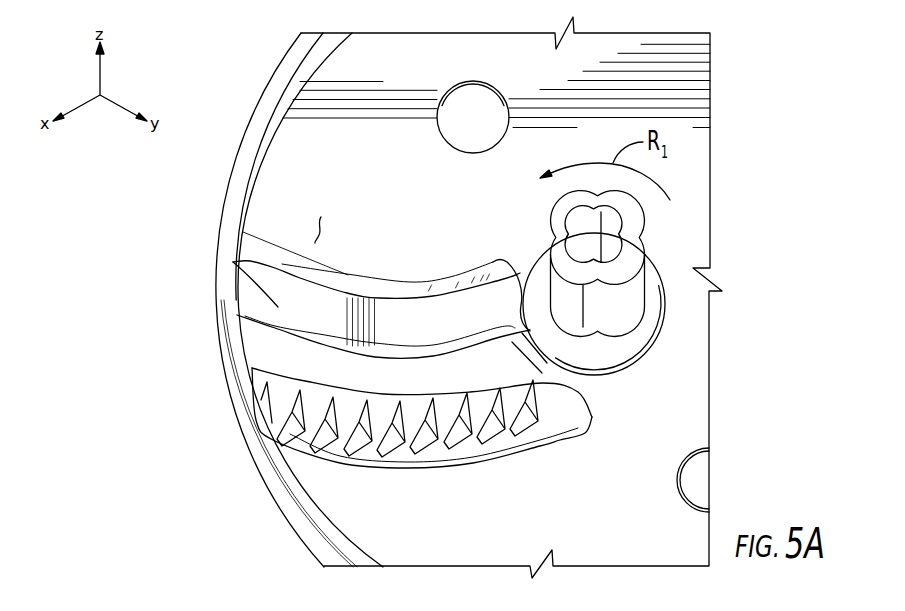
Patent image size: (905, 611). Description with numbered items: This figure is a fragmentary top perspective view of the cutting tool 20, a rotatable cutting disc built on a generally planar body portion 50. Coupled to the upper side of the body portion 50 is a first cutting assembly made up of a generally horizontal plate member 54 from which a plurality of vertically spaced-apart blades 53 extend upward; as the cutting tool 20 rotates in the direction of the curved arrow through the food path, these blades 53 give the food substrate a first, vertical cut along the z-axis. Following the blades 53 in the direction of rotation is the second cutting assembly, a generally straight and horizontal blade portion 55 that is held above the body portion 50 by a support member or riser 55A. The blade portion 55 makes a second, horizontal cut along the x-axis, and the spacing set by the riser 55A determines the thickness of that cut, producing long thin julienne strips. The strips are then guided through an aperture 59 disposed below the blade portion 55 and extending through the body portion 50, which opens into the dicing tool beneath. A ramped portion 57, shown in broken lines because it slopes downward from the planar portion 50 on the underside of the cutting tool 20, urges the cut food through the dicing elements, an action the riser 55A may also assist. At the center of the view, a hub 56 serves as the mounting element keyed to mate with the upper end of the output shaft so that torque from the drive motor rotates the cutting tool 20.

The cutting tool 20 is at (238, 505).
The planar body portion 50 is at (545, 516).
The blades 53 is at (547, 400).
The plate member 54 is at (567, 428).
The blade portion 55 is at (278, 307).
The riser 55A is at (300, 274).
The hub 56 is at (618, 307).
The ramped portion 57 is at (313, 227).
The aperture 59 is at (280, 351).